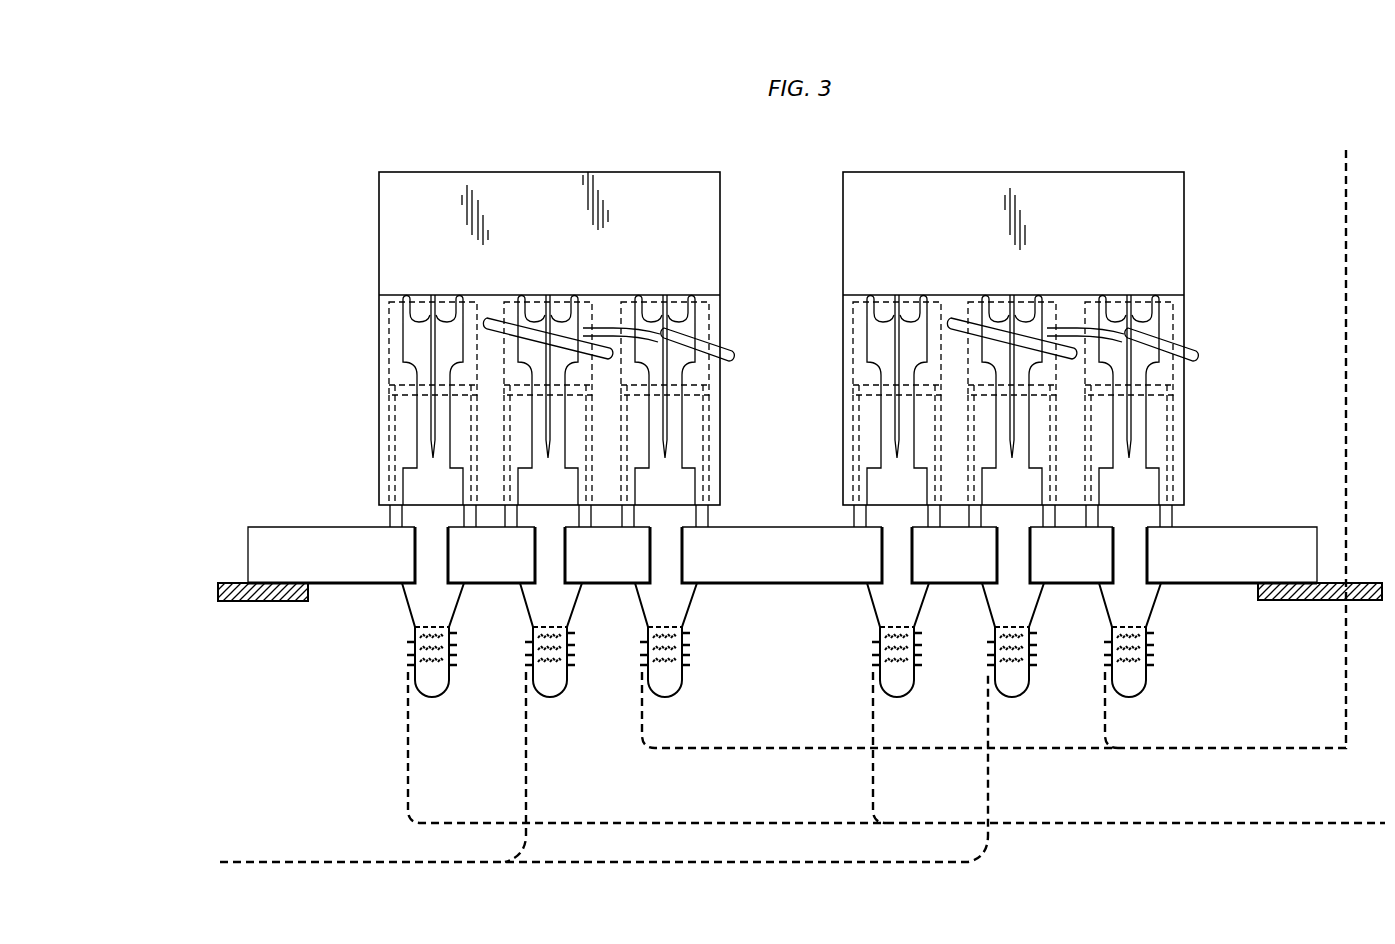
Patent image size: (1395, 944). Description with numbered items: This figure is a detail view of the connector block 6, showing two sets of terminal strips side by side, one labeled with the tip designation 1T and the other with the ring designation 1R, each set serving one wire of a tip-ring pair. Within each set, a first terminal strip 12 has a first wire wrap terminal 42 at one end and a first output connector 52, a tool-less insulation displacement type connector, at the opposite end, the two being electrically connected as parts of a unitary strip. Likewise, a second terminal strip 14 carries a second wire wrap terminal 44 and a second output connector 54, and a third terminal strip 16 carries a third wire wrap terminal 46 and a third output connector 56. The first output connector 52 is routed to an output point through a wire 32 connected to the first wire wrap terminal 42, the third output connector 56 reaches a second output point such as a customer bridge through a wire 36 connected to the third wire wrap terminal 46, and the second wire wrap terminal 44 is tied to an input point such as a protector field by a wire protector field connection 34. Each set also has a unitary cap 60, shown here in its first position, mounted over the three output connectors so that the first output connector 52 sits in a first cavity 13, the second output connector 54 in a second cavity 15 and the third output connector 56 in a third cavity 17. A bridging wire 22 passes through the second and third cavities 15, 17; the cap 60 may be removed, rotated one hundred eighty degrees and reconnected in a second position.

The tip column label designation 1T is at (549, 216).
The ring column label designation 1R is at (1013, 216).
The unitary cap 60 is at (379, 213).
The first cavity 13 is at (420, 300).
The second cavity 15 is at (538, 300).
The third cavity 17 is at (653, 302).
The bridging wire 22 is at (604, 330).
The third output connector 56 is at (700, 322).
The first output connector 52 is at (406, 348).
The second output connector 54 is at (525, 360).
The second terminal strip 14 is at (568, 482).
The first terminal strip 12 is at (408, 488).
The third terminal strip 16 is at (685, 484).
The connector block 6 is at (288, 535).
The first wire wrap terminal 42 is at (437, 686).
The second wire wrap terminal 44 is at (555, 686).
The third wire wrap terminal 46 is at (670, 686).
The wire 32 is at (1085, 823).
The wire protector field connection 34 is at (750, 862).
The wire 36 is at (1346, 282).